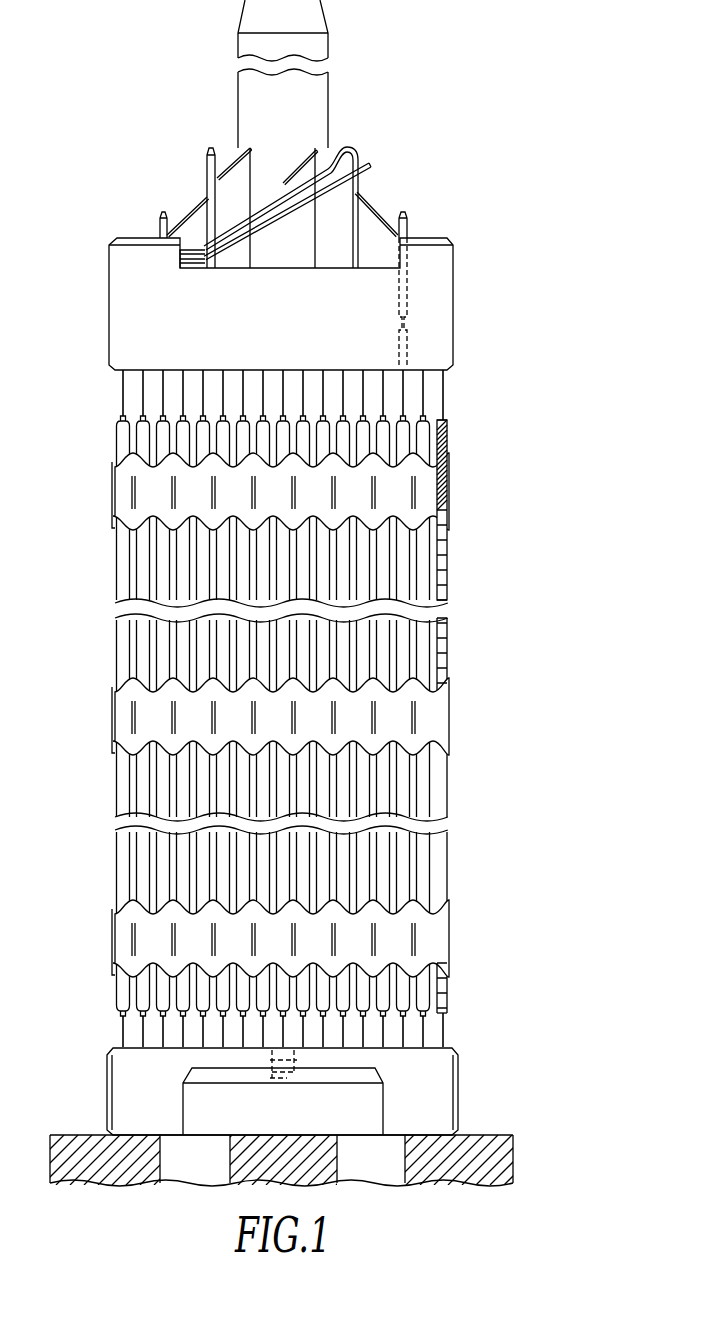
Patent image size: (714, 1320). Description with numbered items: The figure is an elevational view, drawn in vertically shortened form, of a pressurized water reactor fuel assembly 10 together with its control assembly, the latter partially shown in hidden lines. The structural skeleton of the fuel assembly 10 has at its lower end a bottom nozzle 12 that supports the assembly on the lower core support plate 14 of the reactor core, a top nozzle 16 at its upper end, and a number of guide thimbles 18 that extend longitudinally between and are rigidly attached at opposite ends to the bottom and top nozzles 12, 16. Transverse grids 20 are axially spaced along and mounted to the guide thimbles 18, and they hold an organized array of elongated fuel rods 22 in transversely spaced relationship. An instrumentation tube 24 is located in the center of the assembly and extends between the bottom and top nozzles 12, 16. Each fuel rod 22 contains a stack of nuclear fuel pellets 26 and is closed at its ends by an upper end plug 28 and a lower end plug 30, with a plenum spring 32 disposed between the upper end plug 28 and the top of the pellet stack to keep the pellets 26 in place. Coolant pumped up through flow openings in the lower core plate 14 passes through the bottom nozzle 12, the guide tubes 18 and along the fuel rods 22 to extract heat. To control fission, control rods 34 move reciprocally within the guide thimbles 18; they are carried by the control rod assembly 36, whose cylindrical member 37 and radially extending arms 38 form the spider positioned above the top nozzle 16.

The fuel assembly 10 is at (300, 593).
The bottom nozzle 12 is at (323, 1087).
The lower core support plate 14 is at (490, 1135).
The top nozzle 16 is at (100, 289).
The guide thimbles 18 is at (153, 397).
The transverse grids 20 is at (113, 492).
The fuel rods 22 is at (117, 642).
The instrumentation tube 24 is at (283, 1040).
The nuclear fuel pellets 26 is at (447, 572).
The upper end plug 28 is at (443, 421).
The lower end plug 30 is at (447, 1008).
The plenum spring 32 is at (448, 477).
The control rods 34 is at (407, 340).
The control rod assembly 36 is at (366, 134).
The cylindrical member 37 is at (328, 86).
The arms 38 is at (193, 202).